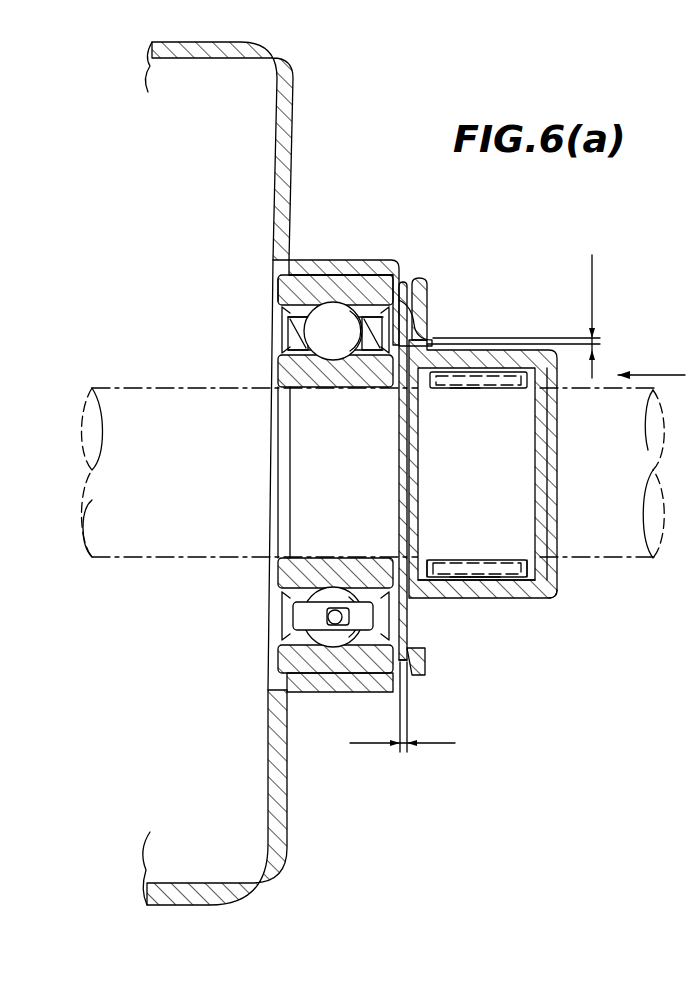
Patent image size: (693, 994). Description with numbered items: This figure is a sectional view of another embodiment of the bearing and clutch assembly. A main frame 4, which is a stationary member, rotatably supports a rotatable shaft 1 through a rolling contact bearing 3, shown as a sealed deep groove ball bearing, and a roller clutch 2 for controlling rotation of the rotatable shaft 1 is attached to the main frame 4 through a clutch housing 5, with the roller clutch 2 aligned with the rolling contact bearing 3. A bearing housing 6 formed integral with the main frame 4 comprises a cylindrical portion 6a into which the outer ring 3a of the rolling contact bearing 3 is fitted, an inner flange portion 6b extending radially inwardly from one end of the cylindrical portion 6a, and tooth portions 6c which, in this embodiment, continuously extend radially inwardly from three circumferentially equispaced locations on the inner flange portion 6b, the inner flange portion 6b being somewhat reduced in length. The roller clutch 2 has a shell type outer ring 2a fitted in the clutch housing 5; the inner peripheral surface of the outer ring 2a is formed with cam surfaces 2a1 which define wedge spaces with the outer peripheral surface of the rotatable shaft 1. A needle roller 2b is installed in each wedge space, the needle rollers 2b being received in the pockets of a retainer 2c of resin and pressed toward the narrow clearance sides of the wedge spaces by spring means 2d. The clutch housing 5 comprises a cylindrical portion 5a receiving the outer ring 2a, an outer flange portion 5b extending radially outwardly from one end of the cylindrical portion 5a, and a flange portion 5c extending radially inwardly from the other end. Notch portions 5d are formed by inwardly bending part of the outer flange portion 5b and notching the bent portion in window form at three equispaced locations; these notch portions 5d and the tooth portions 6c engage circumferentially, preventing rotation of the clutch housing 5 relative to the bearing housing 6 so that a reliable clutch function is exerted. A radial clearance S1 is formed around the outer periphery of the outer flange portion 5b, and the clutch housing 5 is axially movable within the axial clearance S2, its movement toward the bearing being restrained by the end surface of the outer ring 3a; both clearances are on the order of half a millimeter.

The rotatable shaft 1 is at (118, 387).
The roller clutch 2 is at (521, 404).
The outer ring 2a is at (485, 572).
The cam surfaces 2a1 is at (465, 579).
The needle roller 2b is at (441, 560).
The retainer 2c is at (530, 566).
The spring means 2d is at (466, 392).
The rolling contact bearing 3 is at (256, 318).
The outer ring 3a is at (276, 282).
The main frame 4 is at (296, 102).
The clutch housing 5 is at (549, 606).
The cylindrical portion 5a is at (515, 599).
The outer flange portion 5b is at (408, 664).
The flange portion 5c is at (556, 586).
The notch portions 5d is at (428, 330).
The bearing housing 6 is at (363, 250).
The cylindrical portion 6a is at (324, 270).
The inner flange portion 6b is at (432, 658).
The tooth portions 6c is at (430, 332).
The radial clearance S1 is at (637, 317).
The axial clearance S2 is at (397, 707).